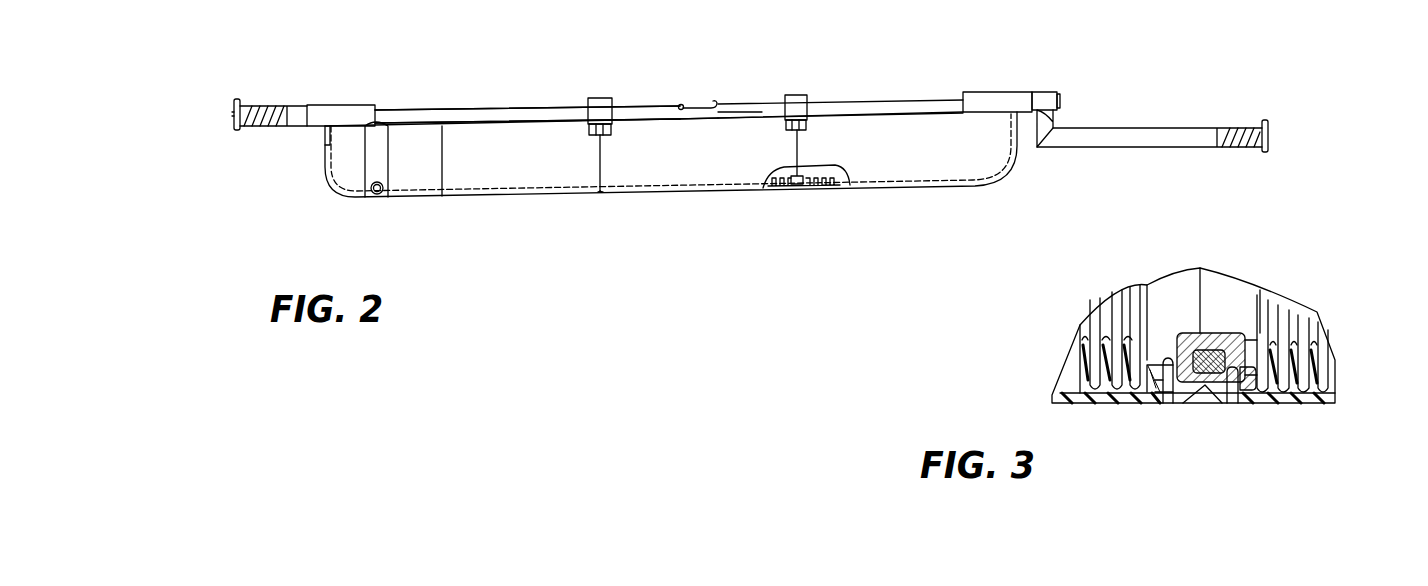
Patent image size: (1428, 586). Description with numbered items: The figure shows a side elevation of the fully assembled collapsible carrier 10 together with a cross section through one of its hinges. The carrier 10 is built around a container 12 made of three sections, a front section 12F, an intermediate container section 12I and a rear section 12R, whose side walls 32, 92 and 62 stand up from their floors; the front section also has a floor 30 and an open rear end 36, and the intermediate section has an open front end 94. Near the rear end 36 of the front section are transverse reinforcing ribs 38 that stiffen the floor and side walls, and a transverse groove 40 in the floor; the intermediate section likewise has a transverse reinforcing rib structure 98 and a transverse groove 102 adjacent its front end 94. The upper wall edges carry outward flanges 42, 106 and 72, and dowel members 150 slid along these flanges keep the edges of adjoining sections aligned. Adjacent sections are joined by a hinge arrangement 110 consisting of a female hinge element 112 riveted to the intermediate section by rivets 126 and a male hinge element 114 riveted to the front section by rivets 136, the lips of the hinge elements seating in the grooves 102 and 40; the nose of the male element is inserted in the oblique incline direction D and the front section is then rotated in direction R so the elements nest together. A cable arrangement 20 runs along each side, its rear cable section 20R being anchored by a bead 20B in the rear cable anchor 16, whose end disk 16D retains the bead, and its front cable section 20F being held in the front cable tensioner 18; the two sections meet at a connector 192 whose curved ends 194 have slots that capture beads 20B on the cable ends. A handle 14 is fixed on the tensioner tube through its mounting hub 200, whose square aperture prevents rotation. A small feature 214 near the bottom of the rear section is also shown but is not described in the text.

In FIG. 2, the collapsible carrier 10 is at (935, 42).
In FIG. 2, the container 12 is at (857, 99).
In FIG. 2, the rear section 12R is at (527, 197).
In FIG. 2, the intermediate container section 12I is at (670, 195).
In FIG. 3, the intermediate container section 12I is at (1147, 285).
In FIG. 2, the front section 12F is at (923, 190).
In FIG. 3, the front section 12F is at (1243, 283).
In FIG. 2, the handle 14 is at (1175, 127).
In FIG. 2, the rear cable anchor 16 is at (293, 100).
In FIG. 2, the rear rod end flange 16D is at (240, 98).
In FIG. 2, the front cable tensioner 18 is at (1065, 100).
In FIG. 2, the cable arrangement 20 is at (669, 66).
In FIG. 2, the rear cable section 20R is at (518, 108).
In FIG. 2, the bead 20B is at (232, 117).
In FIG. 2, the front cable section 20F is at (747, 103).
In FIG. 3, the floor 30 is at (1320, 407).
In FIG. 2, the side walls 32 is at (977, 168).
In FIG. 3, the rear end 36 is at (1213, 277).
In FIG. 2, the transverse reinforcing ribs 38 is at (810, 195).
In FIG. 3, the transverse reinforcing ribs 38 is at (1323, 355).
In FIG. 3, the transverse groove 40 is at (1250, 407).
In FIG. 2, the flange 42 is at (928, 102).
In FIG. 2, the side walls 62 is at (460, 187).
In FIG. 2, the flange 72 is at (383, 149).
In FIG. 2, the side walls 92 is at (630, 183).
In FIG. 3, the front end 94 is at (1180, 285).
In FIG. 2, the transverse reinforcing rib structure 98 is at (770, 178).
In FIG. 3, the transverse reinforcing rib structure 98 is at (1077, 372).
In FIG. 3, the transverse groove 102 is at (1148, 407).
In FIG. 2, the flange 106 is at (762, 117).
In FIG. 2, the hinge arrangement 110 is at (797, 190).
In FIG. 3, the hinge arrangement 110 is at (1190, 410).
In FIG. 3, the female hinge element 112 is at (1250, 315).
In FIG. 3, the male hinge element 114 is at (1177, 357).
In FIG. 3, the rivets 126 is at (1190, 355).
In FIG. 3, the rivets 136 is at (1230, 407).
In FIG. 2, the dowel member 150 is at (605, 98).
In FIG. 2, the connector 192 is at (687, 119).
In FIG. 2, the curved ends 194 is at (683, 104).
In FIG. 2, the mounting hub 200 is at (1038, 92).
In FIG. 2, the roller 214 is at (378, 194).
In FIG. 3, the incline direction D is at (1203, 410).
In FIG. 3, the rotation direction R is at (1230, 440).